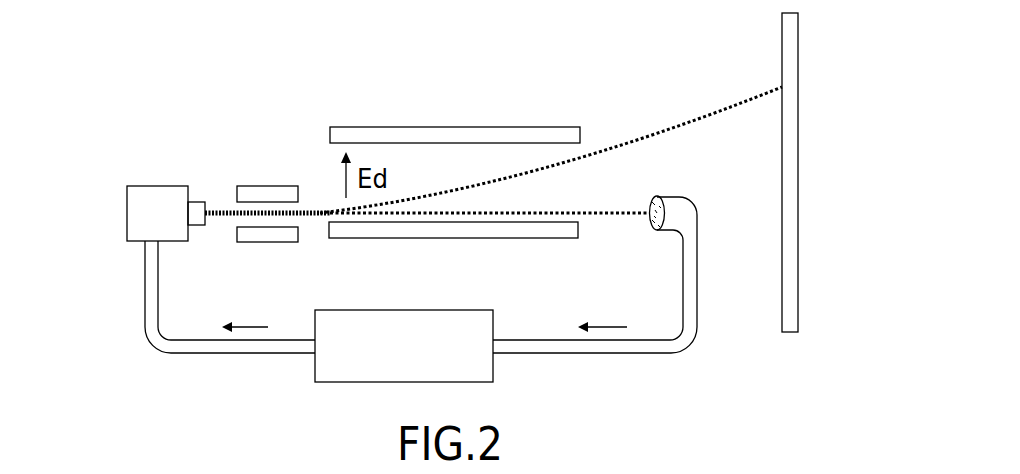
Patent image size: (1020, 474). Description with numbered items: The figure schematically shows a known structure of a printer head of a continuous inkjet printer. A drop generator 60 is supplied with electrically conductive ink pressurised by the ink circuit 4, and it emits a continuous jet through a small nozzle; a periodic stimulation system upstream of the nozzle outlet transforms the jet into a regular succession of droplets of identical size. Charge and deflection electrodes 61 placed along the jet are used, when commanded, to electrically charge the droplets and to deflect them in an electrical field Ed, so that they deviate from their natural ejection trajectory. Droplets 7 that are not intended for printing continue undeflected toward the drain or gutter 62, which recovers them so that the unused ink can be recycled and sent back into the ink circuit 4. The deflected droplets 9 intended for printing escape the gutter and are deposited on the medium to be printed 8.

The ink circuit 4 is at (347, 368).
The droplets 7 is at (627, 218).
The medium to be printed 8 is at (788, 178).
The droplets intended for printing 9 is at (677, 128).
The drop generator 60 is at (135, 207).
The charge and deflection electrodes 61 is at (252, 237).
The drain or gutter 62 is at (680, 210).